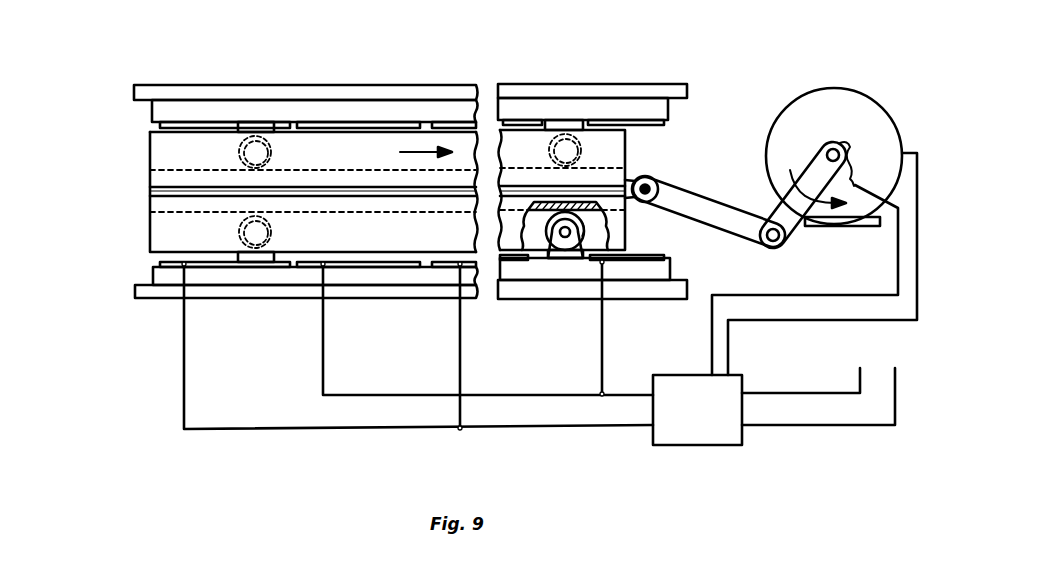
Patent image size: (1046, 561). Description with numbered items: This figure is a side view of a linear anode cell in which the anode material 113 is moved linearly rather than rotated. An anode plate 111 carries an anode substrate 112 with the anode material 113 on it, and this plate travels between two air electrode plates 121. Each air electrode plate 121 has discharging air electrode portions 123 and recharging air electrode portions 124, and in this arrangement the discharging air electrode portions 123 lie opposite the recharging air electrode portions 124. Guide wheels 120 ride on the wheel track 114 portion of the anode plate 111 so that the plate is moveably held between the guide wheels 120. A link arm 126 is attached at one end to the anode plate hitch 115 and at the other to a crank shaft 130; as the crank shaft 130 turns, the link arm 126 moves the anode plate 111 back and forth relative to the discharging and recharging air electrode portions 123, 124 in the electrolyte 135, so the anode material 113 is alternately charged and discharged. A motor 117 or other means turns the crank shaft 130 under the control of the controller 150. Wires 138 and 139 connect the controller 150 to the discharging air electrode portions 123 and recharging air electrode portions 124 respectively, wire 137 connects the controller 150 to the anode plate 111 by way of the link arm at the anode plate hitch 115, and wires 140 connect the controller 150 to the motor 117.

The anode plate 111 is at (96, 130).
The anode substrate 112 is at (150, 192).
The anode material 113 is at (387, 192).
The wheel track 114 is at (593, 231).
The anode plate hitch 115 is at (656, 175).
The motor 117 is at (834, 156).
The guide wheels 120 is at (236, 157).
The air electrode plates 121 is at (112, 75).
The discharging air electrode portions 123 is at (357, 268).
The recharging air electrode portions 124 is at (213, 268).
The link arm 126 is at (745, 243).
The crank shaft 130 is at (790, 242).
The electrolyte 135 is at (378, 160).
The wire 137 is at (898, 263).
The wires 138 is at (322, 328).
The wires 139 is at (217, 433).
The wires 140 is at (770, 321).
The controller 150 is at (697, 410).